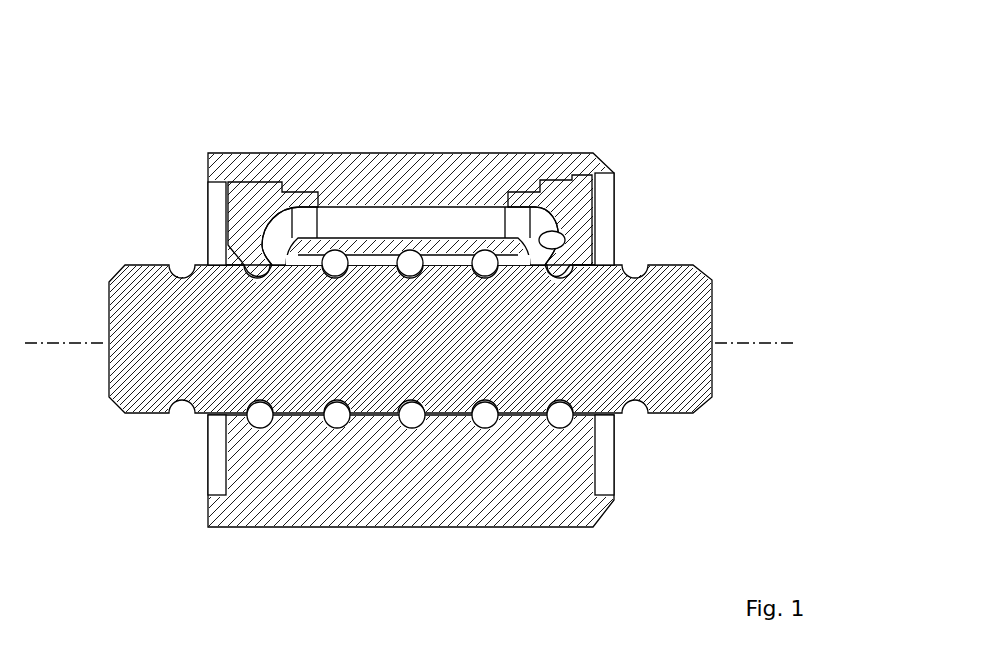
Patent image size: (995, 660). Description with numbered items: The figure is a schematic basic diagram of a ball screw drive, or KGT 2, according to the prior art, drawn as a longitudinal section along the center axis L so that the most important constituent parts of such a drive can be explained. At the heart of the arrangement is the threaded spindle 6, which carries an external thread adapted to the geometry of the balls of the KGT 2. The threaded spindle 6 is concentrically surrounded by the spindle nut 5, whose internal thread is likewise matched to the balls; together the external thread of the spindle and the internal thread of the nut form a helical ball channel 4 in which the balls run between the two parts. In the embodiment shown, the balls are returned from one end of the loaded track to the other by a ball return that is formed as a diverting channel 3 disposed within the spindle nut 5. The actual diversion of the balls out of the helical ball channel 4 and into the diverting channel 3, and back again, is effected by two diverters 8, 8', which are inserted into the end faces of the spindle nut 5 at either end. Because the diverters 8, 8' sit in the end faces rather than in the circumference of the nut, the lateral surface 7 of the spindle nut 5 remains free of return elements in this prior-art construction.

The KGT 2 is at (387, 311).
The diverting channel 3 is at (378, 220).
The helical ball channel 4 is at (258, 417).
The spindle nut 5 is at (500, 482).
The threaded spindle 6 is at (146, 303).
The lateral surface 7 is at (427, 326).
The diverter 8 is at (215, 200).
The diverter 8' is at (625, 218).
The center axis L is at (410, 327).